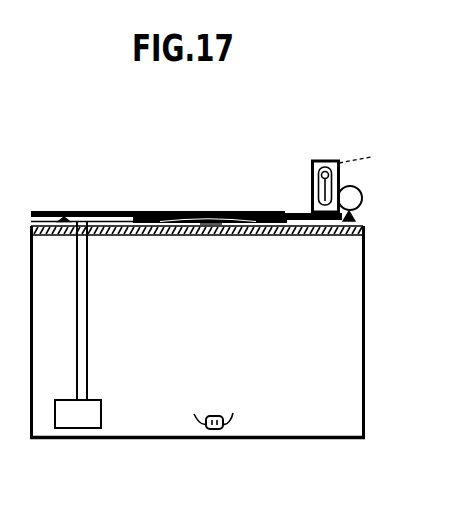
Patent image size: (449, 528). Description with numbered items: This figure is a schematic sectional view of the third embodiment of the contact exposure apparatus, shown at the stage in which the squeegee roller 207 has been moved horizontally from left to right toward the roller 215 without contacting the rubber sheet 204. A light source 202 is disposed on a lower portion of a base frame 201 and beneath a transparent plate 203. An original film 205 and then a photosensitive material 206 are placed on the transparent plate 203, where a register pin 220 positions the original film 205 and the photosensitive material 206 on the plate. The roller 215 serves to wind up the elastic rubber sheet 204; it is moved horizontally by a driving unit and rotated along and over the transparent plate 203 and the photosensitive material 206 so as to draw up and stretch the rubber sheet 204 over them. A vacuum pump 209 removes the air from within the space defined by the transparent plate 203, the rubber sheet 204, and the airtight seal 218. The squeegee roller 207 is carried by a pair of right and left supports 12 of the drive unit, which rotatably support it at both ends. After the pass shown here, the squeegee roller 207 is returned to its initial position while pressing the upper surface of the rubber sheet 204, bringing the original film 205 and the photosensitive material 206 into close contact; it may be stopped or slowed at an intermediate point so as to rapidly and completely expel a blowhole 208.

The support 12 is at (322, 160).
The base frame 201 is at (364, 348).
The light source 202 is at (231, 437).
The transparent plate 203 is at (348, 238).
The elastic rubber sheet 204 is at (116, 211).
The original film 205 is at (190, 236).
The photosensitive material 206 is at (165, 217).
The squeegee roller 207 is at (374, 154).
The blowhole 208 is at (212, 236).
The vacuum pump 209 is at (79, 428).
The roller 215 is at (358, 191).
The airtight seal 218 is at (357, 215).
The register pin 220 is at (283, 213).